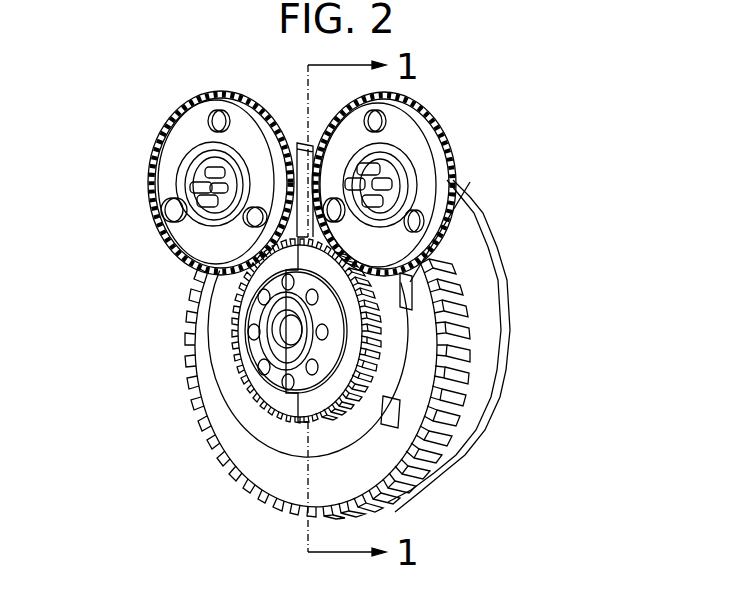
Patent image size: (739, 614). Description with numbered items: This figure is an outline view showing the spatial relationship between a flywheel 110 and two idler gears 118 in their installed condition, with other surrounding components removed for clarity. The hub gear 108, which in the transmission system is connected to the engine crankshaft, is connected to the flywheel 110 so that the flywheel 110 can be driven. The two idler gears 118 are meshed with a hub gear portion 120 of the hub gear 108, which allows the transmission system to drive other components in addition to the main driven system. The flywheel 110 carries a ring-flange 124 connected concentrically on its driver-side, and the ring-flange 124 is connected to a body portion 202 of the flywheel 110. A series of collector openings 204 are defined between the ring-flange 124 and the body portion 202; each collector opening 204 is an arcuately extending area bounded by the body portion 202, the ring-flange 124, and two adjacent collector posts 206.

The hub gear 108 is at (314, 401).
The flywheel 110 is at (480, 290).
The idler gears 118 is at (183, 137).
The hub gear portion 120 is at (262, 408).
The ring-flange 124 is at (342, 428).
The body portion 202 is at (413, 385).
The collector openings 204 is at (412, 348).
The collector posts 206 is at (408, 286).